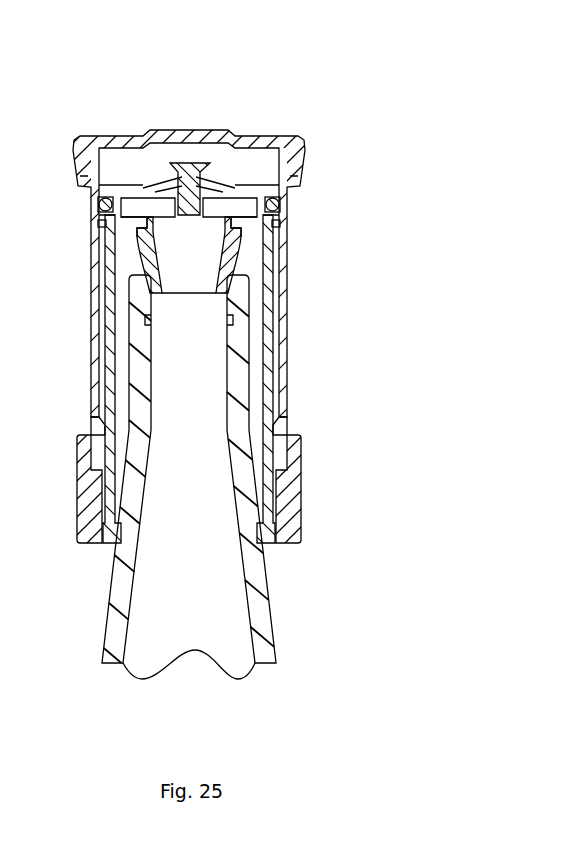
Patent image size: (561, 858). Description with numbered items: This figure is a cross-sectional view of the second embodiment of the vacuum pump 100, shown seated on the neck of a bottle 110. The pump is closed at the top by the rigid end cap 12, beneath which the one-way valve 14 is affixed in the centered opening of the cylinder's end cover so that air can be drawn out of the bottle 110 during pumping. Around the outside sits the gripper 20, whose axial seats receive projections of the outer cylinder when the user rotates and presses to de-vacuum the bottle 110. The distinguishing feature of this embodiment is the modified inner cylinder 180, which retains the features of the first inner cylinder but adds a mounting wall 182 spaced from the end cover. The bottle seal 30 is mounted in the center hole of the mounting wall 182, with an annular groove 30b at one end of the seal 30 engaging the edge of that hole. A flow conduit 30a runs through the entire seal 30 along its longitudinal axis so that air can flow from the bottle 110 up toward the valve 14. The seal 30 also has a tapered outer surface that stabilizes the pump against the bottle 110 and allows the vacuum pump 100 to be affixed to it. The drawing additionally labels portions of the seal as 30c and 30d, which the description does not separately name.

The vacuum pump 100 is at (390, 112).
The end cap 12 is at (86, 160).
The one-way valve 14 is at (202, 163).
The gripper 20 is at (287, 490).
The bottle seal 30 is at (143, 252).
The flow conduit 30a is at (208, 259).
The annular groove 30b is at (150, 268).
The valve flange 30c is at (238, 220).
The seal ring 30d is at (252, 220).
The bottle 110 is at (270, 609).
The inner cylinder 180 is at (268, 383).
The mounting wall 182 is at (275, 229).